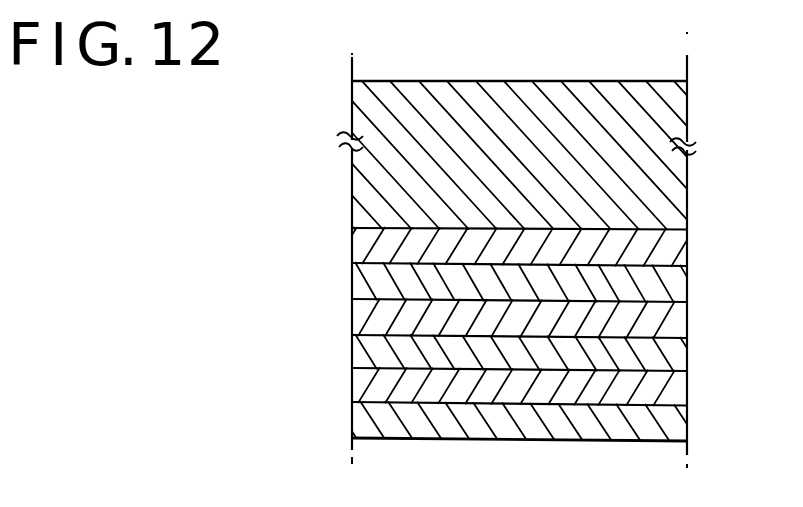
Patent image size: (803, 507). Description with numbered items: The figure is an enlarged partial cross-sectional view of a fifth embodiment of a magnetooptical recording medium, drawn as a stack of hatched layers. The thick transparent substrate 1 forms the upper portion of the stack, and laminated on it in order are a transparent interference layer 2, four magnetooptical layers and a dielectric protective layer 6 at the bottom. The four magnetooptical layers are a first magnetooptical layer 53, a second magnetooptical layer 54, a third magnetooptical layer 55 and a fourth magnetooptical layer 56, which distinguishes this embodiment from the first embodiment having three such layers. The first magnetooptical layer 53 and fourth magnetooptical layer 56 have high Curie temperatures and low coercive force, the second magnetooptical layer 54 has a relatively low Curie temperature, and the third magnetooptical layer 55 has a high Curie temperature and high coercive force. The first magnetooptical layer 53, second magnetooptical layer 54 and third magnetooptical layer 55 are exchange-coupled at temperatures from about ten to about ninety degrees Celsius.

The transparent substrate 1 is at (467, 89).
The transparent interference layer 2 is at (690, 243).
The first magnetooptical layer 53 is at (690, 284).
The second magnetooptical layer 54 is at (688, 327).
The third magnetooptical layer 55 is at (685, 358).
The fourth magnetooptical layer 56 is at (688, 398).
The dielectric protective layer 6 is at (592, 426).